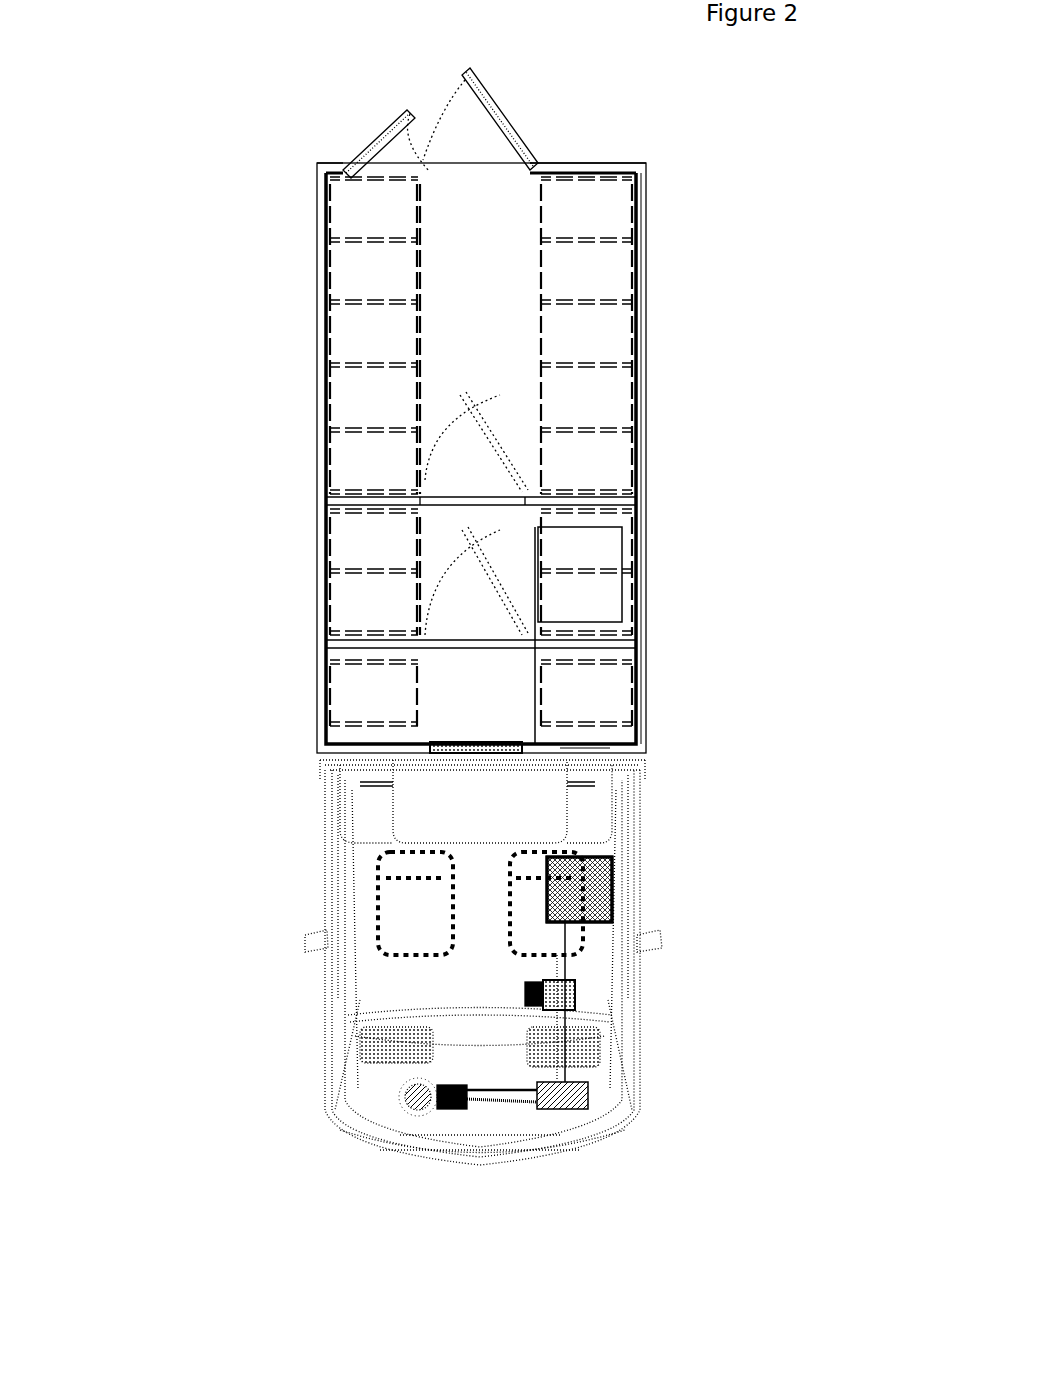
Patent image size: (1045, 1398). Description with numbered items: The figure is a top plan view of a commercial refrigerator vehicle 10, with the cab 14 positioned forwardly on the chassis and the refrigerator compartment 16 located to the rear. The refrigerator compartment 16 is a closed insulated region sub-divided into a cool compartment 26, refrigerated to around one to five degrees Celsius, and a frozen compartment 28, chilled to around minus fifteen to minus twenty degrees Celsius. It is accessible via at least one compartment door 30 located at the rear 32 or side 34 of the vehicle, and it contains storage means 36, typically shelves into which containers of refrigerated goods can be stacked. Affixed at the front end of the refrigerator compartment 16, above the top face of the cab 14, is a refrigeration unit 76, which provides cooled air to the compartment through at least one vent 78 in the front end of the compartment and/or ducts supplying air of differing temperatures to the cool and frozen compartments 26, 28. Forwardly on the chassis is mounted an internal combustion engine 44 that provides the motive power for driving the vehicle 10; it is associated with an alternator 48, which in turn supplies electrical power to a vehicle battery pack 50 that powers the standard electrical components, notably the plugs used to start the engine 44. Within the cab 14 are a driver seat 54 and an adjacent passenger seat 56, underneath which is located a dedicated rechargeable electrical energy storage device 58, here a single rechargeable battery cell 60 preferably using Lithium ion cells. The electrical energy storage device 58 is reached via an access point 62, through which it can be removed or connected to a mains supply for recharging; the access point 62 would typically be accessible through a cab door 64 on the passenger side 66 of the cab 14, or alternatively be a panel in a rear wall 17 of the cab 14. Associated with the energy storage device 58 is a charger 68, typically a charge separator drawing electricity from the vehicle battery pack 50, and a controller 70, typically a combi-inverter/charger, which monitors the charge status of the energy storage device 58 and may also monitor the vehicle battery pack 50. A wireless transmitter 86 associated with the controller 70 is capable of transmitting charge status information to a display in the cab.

The commercial refrigerator vehicle 10 is at (200, 156).
The cab 14 is at (322, 1072).
The refrigerator compartment 16 is at (306, 375).
The rear wall 17 is at (588, 752).
The cool compartment 26 is at (452, 538).
The frozen compartment 28 is at (460, 682).
The compartment door 30 is at (397, 112).
The rear 32 is at (600, 158).
The side 34 is at (650, 350).
The storage means 36 is at (620, 258).
The internal combustion engine 44 is at (404, 1102).
The alternator 48 is at (452, 1113).
The vehicle battery pack 50 is at (556, 1112).
The driver seat 54 is at (376, 905).
The passenger seat 56 is at (506, 918).
The rechargeable electrical energy storage device 58 is at (616, 890).
The rechargeable battery cell 60 is at (579, 889).
The access point 62 is at (622, 873).
The cab door 64 is at (640, 958).
The passenger side 66 is at (650, 800).
The charger 68 is at (578, 1002).
The controller 70 is at (559, 995).
The refrigeration unit 76 is at (496, 576).
The vent 78 is at (427, 752).
The wireless transmitter 86 is at (524, 995).